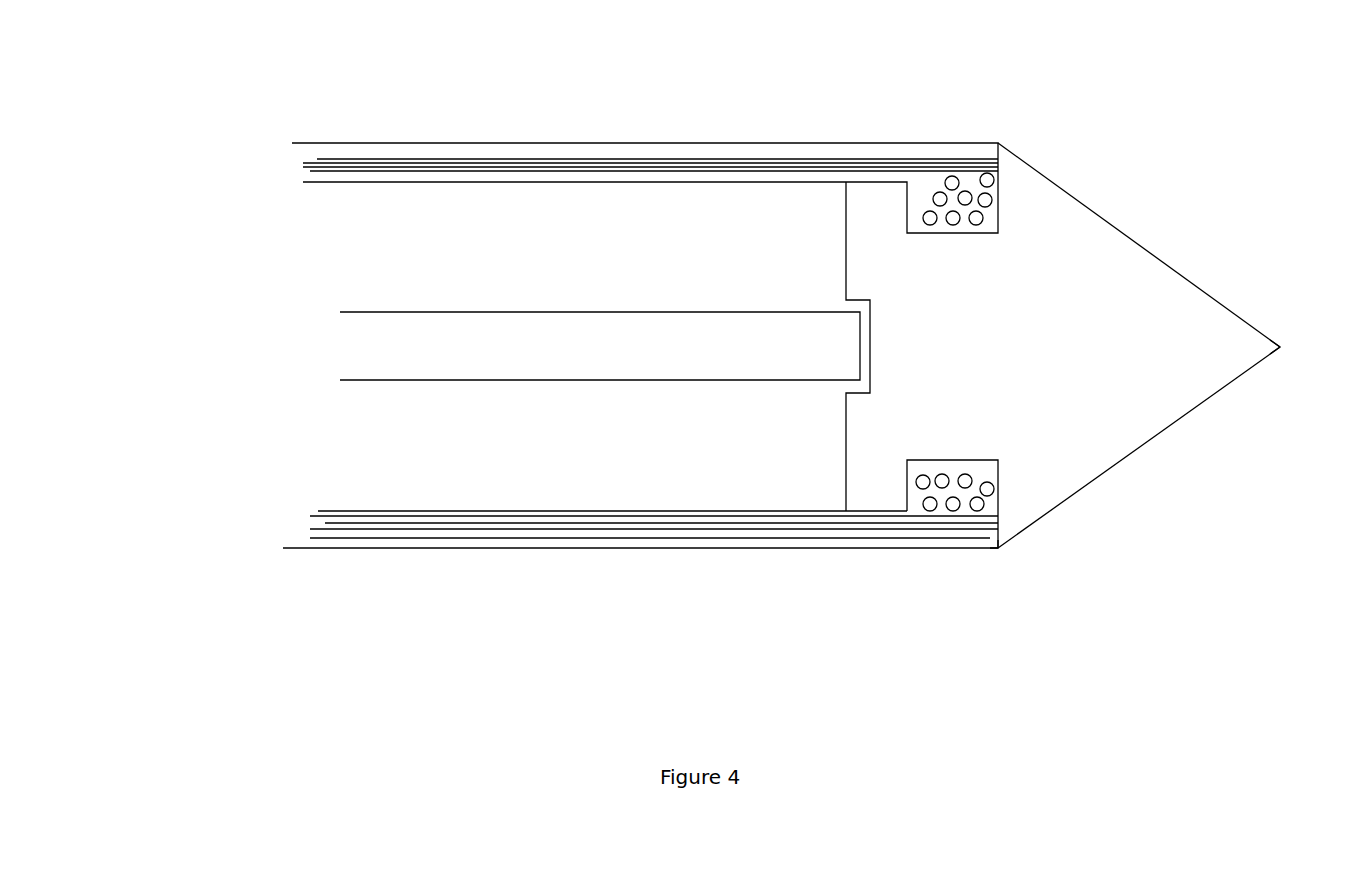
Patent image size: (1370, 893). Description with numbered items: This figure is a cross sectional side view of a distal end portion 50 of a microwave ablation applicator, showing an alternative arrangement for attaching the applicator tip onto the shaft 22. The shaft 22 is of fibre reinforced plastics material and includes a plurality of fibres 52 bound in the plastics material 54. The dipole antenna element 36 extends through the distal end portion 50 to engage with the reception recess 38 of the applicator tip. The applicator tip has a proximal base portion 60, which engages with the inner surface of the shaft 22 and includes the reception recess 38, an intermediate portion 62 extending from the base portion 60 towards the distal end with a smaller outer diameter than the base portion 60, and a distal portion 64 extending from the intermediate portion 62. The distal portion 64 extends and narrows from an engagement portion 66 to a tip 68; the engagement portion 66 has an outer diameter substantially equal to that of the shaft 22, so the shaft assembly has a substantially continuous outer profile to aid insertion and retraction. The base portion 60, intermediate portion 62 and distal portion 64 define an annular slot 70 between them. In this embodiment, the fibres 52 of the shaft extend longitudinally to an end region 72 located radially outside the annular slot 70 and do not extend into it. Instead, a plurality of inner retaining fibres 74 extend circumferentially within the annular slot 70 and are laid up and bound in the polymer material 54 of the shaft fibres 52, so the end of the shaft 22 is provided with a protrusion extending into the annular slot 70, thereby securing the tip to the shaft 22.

The distal end portion 50 is at (237, 110).
The shaft 22 is at (364, 143).
The fibres 52 is at (530, 160).
The plastics material 54 is at (640, 156).
The dipole antenna element 36 is at (430, 312).
The reception recess 38 is at (855, 310).
The proximal base portion 60 is at (930, 190).
The intermediate portion 62 is at (980, 290).
The distal portion 64 is at (1140, 447).
The engagement portion 66 is at (998, 548).
The tip 68 is at (1280, 347).
The annular slot 70 is at (892, 232).
The end region 72 is at (918, 158).
The inner retaining fibres 74 is at (960, 158).